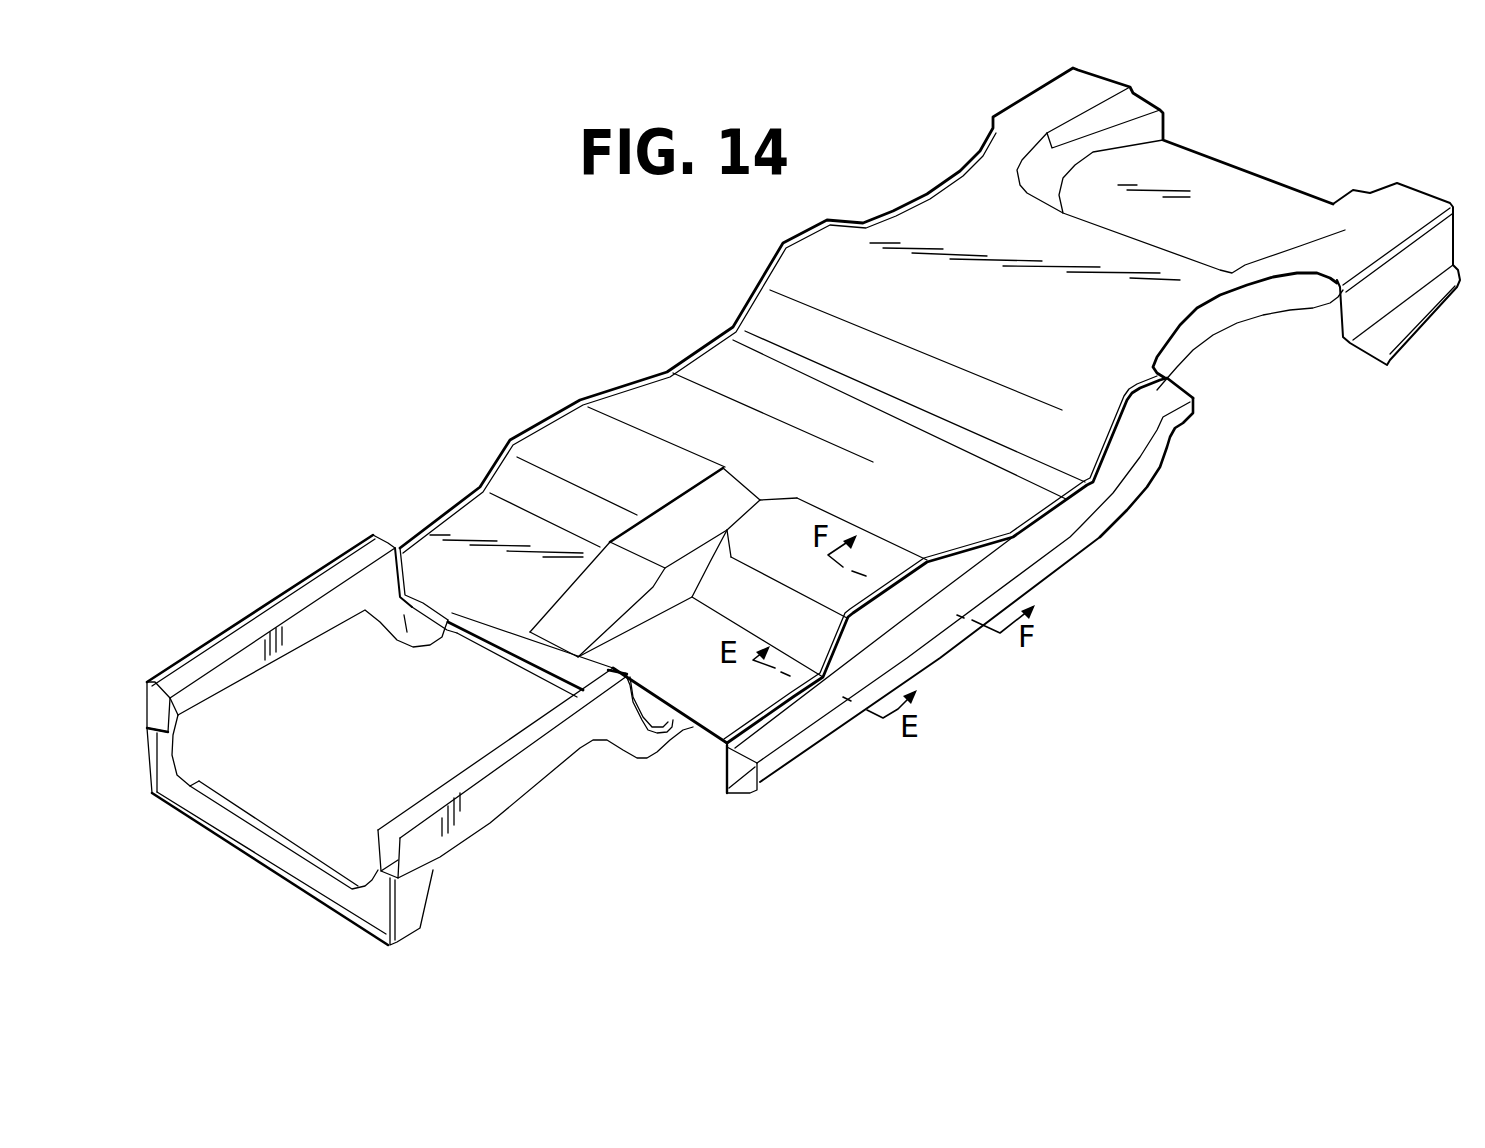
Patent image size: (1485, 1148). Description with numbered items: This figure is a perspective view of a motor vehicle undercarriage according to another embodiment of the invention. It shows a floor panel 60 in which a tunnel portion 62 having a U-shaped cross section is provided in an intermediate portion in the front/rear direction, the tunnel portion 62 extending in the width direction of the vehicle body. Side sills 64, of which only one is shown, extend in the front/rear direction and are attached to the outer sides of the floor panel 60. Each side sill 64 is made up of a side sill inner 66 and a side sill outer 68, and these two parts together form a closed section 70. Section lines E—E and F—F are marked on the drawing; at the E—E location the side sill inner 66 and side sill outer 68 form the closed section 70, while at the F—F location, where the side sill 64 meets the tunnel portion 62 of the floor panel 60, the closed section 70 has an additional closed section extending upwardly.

The floor panel 60 is at (420, 740).
The tunnel portion 62 is at (930, 408).
The side sill 64 is at (706, 824).
The side sill inner 66 is at (700, 785).
The side sill outer 68 is at (975, 608).
The closed section 70 is at (765, 819).